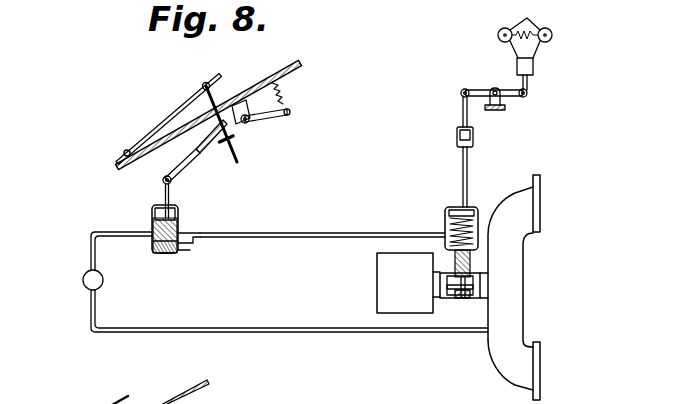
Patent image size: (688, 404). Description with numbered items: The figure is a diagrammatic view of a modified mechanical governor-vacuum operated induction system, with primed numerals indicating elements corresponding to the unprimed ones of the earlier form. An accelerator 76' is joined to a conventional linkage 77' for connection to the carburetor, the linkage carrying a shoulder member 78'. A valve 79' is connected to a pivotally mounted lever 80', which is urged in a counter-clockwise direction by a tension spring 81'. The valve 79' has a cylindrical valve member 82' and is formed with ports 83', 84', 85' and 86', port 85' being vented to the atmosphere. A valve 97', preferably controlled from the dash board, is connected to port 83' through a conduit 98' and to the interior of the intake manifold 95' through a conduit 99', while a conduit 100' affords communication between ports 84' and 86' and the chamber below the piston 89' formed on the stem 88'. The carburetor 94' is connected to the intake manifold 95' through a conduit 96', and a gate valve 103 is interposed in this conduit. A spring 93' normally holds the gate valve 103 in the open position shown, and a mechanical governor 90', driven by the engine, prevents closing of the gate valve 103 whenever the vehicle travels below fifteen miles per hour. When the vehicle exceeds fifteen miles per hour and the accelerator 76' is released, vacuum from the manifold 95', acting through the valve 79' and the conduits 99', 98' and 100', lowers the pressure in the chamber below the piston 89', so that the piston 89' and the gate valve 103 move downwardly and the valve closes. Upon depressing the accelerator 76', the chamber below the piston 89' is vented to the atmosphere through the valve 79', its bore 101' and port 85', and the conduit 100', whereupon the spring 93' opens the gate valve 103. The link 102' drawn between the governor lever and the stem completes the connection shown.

The accelerator 76' is at (169, 119).
The linkage 77' is at (236, 125).
The shoulder member 78' is at (243, 137).
The valve 79' is at (180, 197).
The lever 80' is at (227, 141).
The tension spring 81' is at (290, 93).
The cylindrical valve member 82' is at (180, 227).
The port 83' is at (148, 225).
The port 84' is at (195, 229).
The port 85' is at (149, 255).
The port 86' is at (195, 257).
The stem 88' is at (480, 177).
The piston 89' is at (478, 240).
The mechanical governor 90' is at (540, 38).
The spring 93' is at (493, 154).
The carburetor 94' is at (439, 200).
The intake manifold 95' is at (513, 261).
The conduit 96' is at (456, 307).
The valve 97' is at (81, 286).
The conduit 98' is at (109, 242).
The conduit 99' is at (289, 311).
The conduit 100' is at (322, 224).
The bore 101' is at (168, 268).
The link 102' is at (443, 122).
The gate valve 103 is at (470, 288).